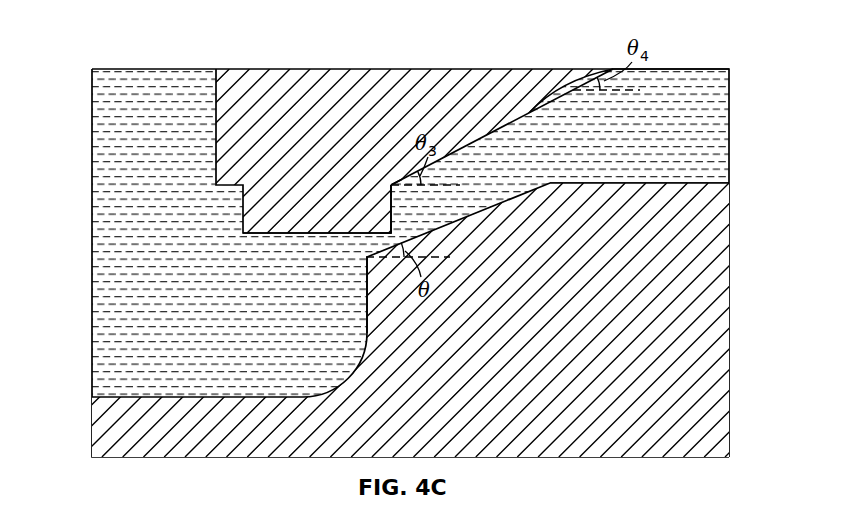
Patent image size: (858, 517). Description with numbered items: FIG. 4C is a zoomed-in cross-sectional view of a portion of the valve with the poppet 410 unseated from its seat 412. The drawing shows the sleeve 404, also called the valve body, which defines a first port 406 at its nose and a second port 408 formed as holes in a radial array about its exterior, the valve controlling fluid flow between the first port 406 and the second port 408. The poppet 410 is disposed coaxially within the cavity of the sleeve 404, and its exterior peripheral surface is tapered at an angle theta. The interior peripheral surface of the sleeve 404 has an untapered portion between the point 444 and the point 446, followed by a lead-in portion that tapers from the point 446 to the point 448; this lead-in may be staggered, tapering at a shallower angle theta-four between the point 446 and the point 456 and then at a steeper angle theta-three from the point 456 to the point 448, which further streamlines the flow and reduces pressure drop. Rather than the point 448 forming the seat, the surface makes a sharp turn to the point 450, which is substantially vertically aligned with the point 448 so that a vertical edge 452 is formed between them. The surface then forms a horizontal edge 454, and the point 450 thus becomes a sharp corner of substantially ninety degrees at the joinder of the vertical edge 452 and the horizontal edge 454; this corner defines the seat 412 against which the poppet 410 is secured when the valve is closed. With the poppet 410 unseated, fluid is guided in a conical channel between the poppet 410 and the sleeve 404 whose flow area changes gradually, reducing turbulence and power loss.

The sleeve 404 is at (290, 96).
The first port 406 is at (750, 98).
The second port 408 is at (154, 77).
The poppet 410 is at (563, 405).
The seat 412 is at (372, 244).
The point 444 is at (726, 58).
The point 446 is at (611, 58).
The point 448 is at (386, 174).
The point 450 is at (387, 221).
The vertical edge 452 is at (391, 215).
The horizontal edge 454 is at (278, 236).
The point 456 is at (559, 77).